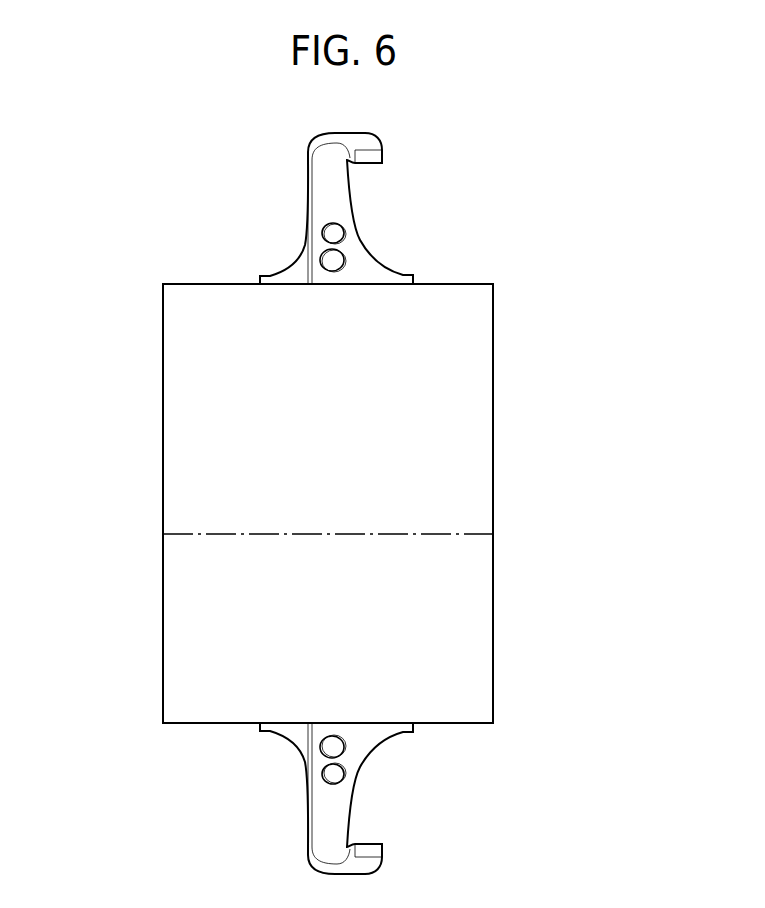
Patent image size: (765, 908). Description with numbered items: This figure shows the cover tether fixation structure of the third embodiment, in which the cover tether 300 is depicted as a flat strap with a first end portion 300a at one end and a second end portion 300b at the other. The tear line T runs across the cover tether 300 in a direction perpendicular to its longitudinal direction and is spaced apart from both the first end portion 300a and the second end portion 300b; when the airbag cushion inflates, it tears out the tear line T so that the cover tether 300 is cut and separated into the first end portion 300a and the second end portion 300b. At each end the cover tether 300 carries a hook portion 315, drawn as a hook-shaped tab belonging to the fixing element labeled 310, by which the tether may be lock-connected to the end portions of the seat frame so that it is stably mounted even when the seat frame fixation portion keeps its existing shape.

The cover tether 300 is at (180, 407).
The first end portion 300a is at (473, 328).
The second end portion 300b is at (473, 693).
The tear line T is at (223, 536).
The hook portion 315 is at (322, 188).
The fixing member 310 is at (322, 812).